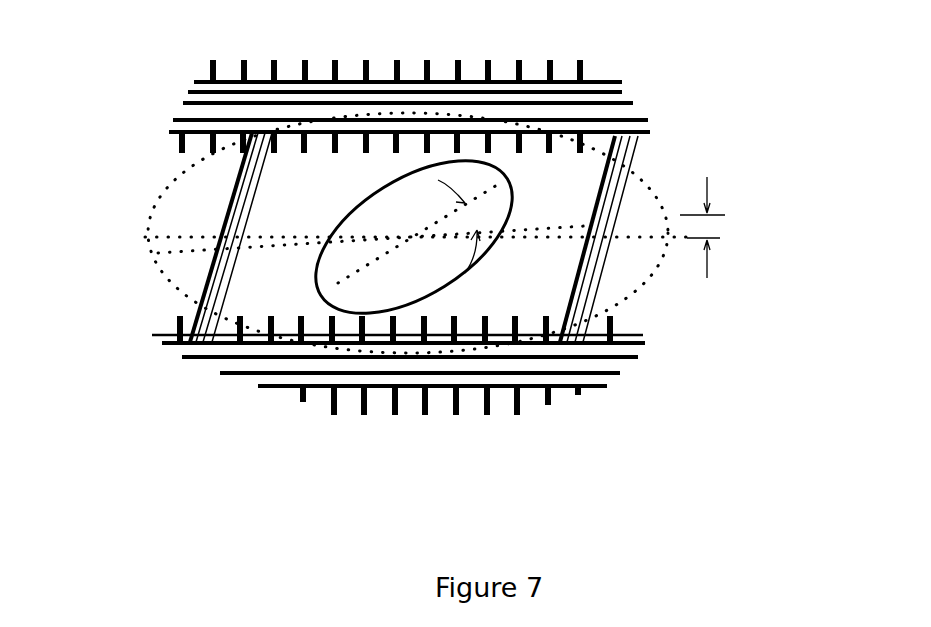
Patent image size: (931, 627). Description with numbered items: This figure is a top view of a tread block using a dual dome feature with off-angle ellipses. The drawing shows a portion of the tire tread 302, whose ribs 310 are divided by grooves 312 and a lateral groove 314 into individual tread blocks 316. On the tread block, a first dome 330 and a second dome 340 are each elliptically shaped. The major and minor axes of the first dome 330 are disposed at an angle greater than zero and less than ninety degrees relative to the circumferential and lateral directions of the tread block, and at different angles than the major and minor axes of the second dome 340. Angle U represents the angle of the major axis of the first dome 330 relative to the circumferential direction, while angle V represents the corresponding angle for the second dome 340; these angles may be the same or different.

The tire tread 302 is at (95, 270).
The ribs 310 is at (427, 225).
The individual tread blocks 316 is at (240, 412).
The grooves 312 is at (630, 117).
The lateral groove 314 is at (253, 140).
The first dome 330 is at (618, 297).
The second dome 340 is at (515, 214).